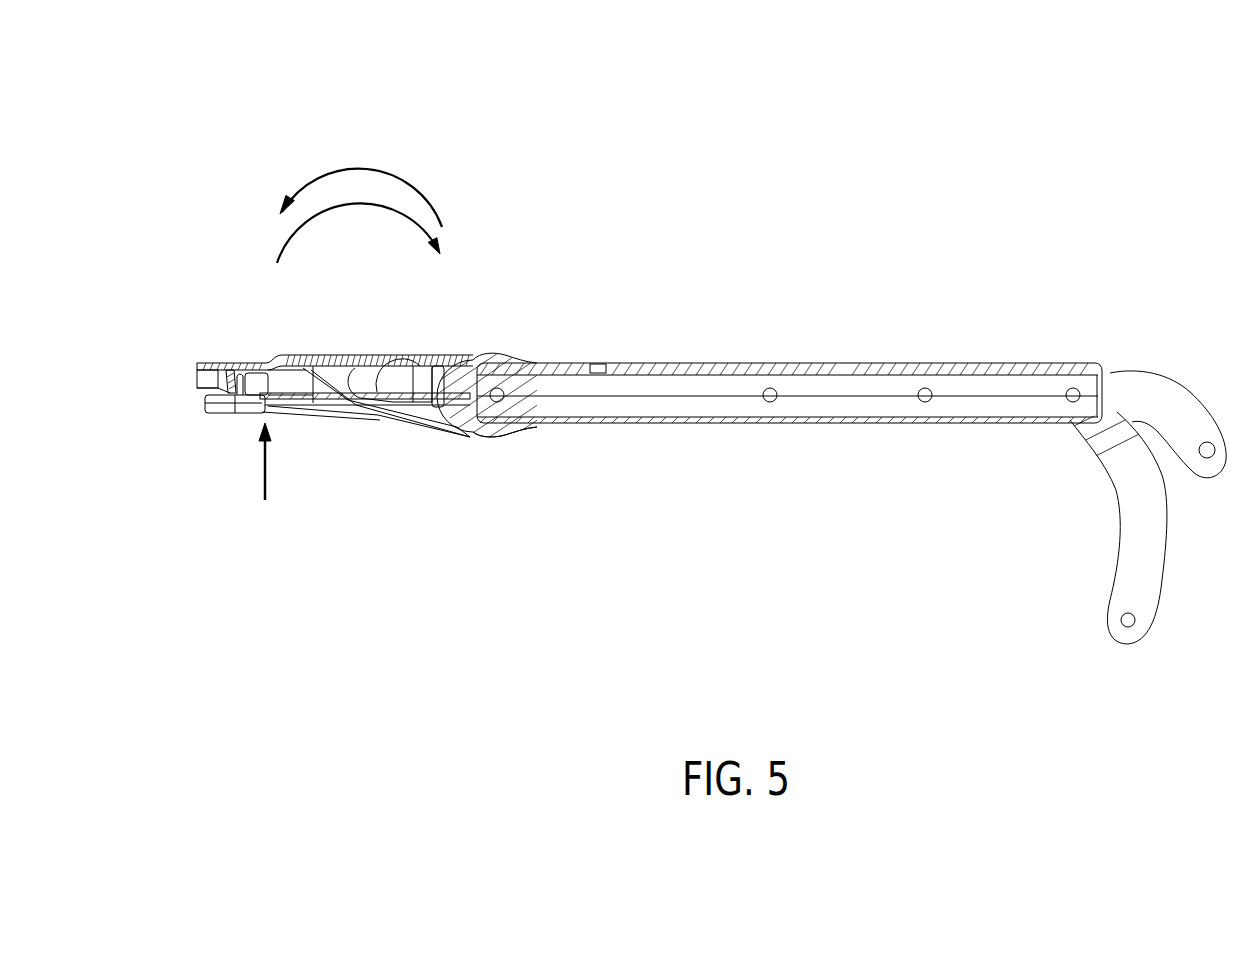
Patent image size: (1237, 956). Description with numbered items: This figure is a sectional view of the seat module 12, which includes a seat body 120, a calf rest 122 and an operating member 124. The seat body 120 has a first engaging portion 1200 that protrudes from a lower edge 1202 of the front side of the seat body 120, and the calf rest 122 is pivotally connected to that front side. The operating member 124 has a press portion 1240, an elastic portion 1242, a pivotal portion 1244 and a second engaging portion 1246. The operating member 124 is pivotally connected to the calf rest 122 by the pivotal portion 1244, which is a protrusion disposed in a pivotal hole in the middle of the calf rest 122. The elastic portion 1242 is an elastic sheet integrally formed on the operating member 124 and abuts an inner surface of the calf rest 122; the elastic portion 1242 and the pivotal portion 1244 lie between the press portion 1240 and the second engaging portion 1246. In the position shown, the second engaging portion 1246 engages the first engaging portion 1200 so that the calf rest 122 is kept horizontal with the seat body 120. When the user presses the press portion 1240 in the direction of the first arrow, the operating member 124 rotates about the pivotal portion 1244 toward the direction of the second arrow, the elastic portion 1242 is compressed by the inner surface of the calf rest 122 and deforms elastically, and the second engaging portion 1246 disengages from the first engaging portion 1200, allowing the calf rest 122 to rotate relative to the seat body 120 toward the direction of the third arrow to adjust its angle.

The seat module 12 is at (745, 147).
The seat body 120 is at (845, 365).
The first engaging portion 1200 is at (472, 435).
The lower edge 1202 is at (503, 438).
The calf rest 122 is at (370, 363).
The pivotal portion 1244 is at (388, 382).
The operating member 124 is at (403, 425).
The press portion 1240 is at (242, 418).
The elastic portion 1242 is at (323, 417).
The second engaging portion 1246 is at (465, 427).